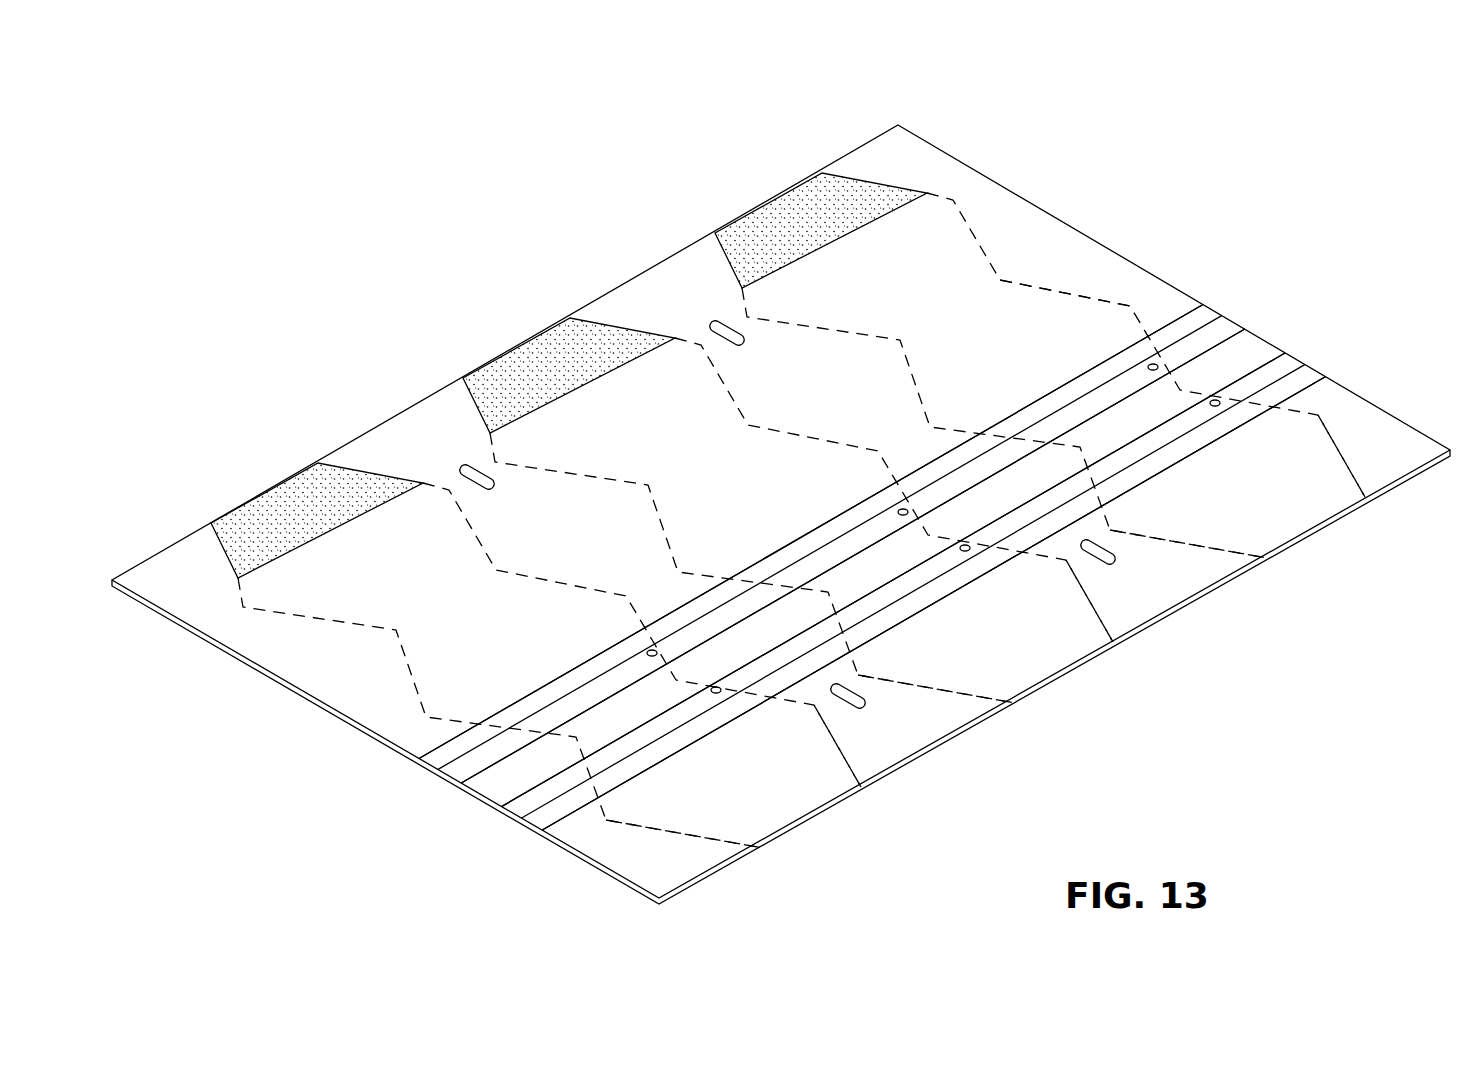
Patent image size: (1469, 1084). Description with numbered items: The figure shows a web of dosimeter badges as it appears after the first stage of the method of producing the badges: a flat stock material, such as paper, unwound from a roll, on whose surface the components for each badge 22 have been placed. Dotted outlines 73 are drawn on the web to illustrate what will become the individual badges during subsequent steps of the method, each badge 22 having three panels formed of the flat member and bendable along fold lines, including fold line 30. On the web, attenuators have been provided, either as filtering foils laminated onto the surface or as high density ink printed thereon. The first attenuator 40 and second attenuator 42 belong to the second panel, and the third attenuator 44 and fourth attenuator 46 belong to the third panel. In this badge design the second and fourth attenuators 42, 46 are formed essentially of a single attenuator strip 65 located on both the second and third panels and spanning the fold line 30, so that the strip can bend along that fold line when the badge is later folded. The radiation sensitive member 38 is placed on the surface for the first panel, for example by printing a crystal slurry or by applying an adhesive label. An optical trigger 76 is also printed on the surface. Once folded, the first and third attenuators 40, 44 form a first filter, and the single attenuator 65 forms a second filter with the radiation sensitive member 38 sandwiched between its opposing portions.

The badge 22 is at (1000, 232).
The fold line 30 is at (1165, 400).
The radiation sensitive member 38 is at (780, 215).
The first attenuator 40 is at (585, 672).
The second attenuator 42 is at (528, 740).
The third attenuator 44 is at (605, 775).
The fourth attenuator 46 is at (578, 735).
The single attenuator strip 65 is at (566, 744).
The dotted outlines 73 is at (1105, 300).
The optical trigger 76 is at (710, 323).